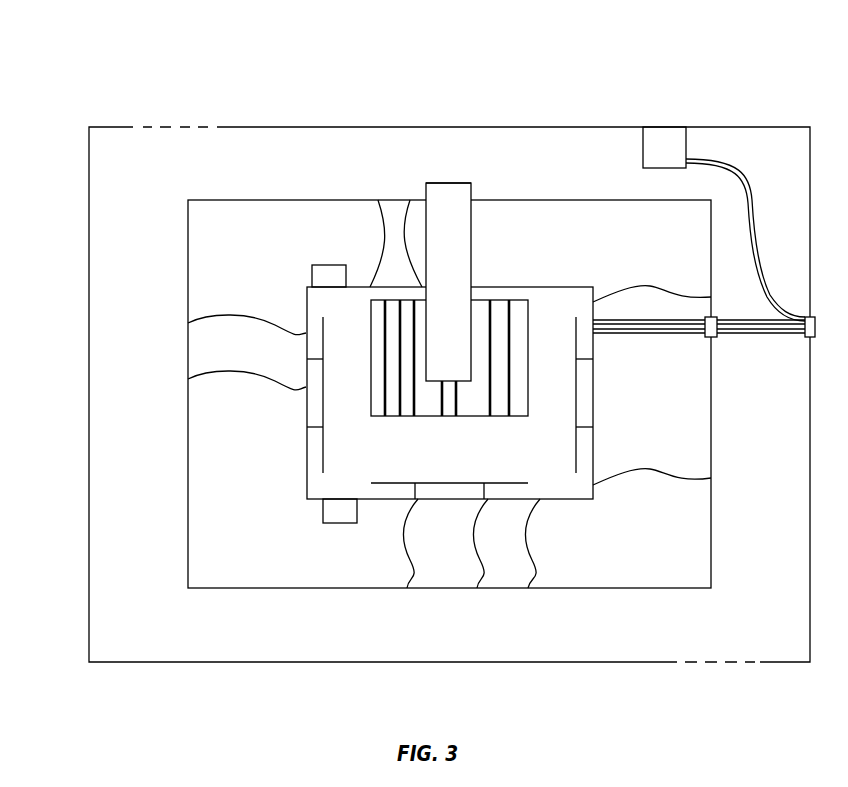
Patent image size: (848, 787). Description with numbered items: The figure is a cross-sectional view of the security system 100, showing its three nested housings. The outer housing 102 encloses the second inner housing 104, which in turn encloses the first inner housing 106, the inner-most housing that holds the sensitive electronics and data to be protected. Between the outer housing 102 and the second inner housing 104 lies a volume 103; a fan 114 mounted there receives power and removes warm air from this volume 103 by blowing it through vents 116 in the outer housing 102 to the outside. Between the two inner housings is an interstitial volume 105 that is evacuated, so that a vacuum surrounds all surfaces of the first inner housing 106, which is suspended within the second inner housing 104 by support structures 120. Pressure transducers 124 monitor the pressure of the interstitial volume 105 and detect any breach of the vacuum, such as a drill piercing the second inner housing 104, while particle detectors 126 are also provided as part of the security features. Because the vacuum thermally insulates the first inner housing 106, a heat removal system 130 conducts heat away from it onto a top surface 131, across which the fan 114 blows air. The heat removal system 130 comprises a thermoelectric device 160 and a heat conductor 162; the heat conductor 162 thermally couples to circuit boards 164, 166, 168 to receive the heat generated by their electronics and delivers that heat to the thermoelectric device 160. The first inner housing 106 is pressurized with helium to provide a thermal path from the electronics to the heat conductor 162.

The security system 100 is at (745, 59).
The outer housing 102 is at (419, 394).
The volume 103 is at (157, 638).
The second inner housing 104 is at (419, 394).
The interstitial volume 105 is at (255, 566).
The first inner housing 106 is at (529, 395).
The fan 114 is at (687, 150).
The vents 116 is at (182, 121).
The support structures 120 is at (652, 400).
The pressure transducers 124 is at (308, 260).
The particle detectors 126 is at (359, 524).
The heat removal system 130 is at (478, 174).
The top surface 131 is at (424, 162).
The thermoelectric device 160 is at (466, 258).
The heat conductor 162 is at (436, 372).
The circuit board 164 is at (356, 396).
The circuit board 166 is at (449, 467).
The circuit board 168 is at (544, 396).